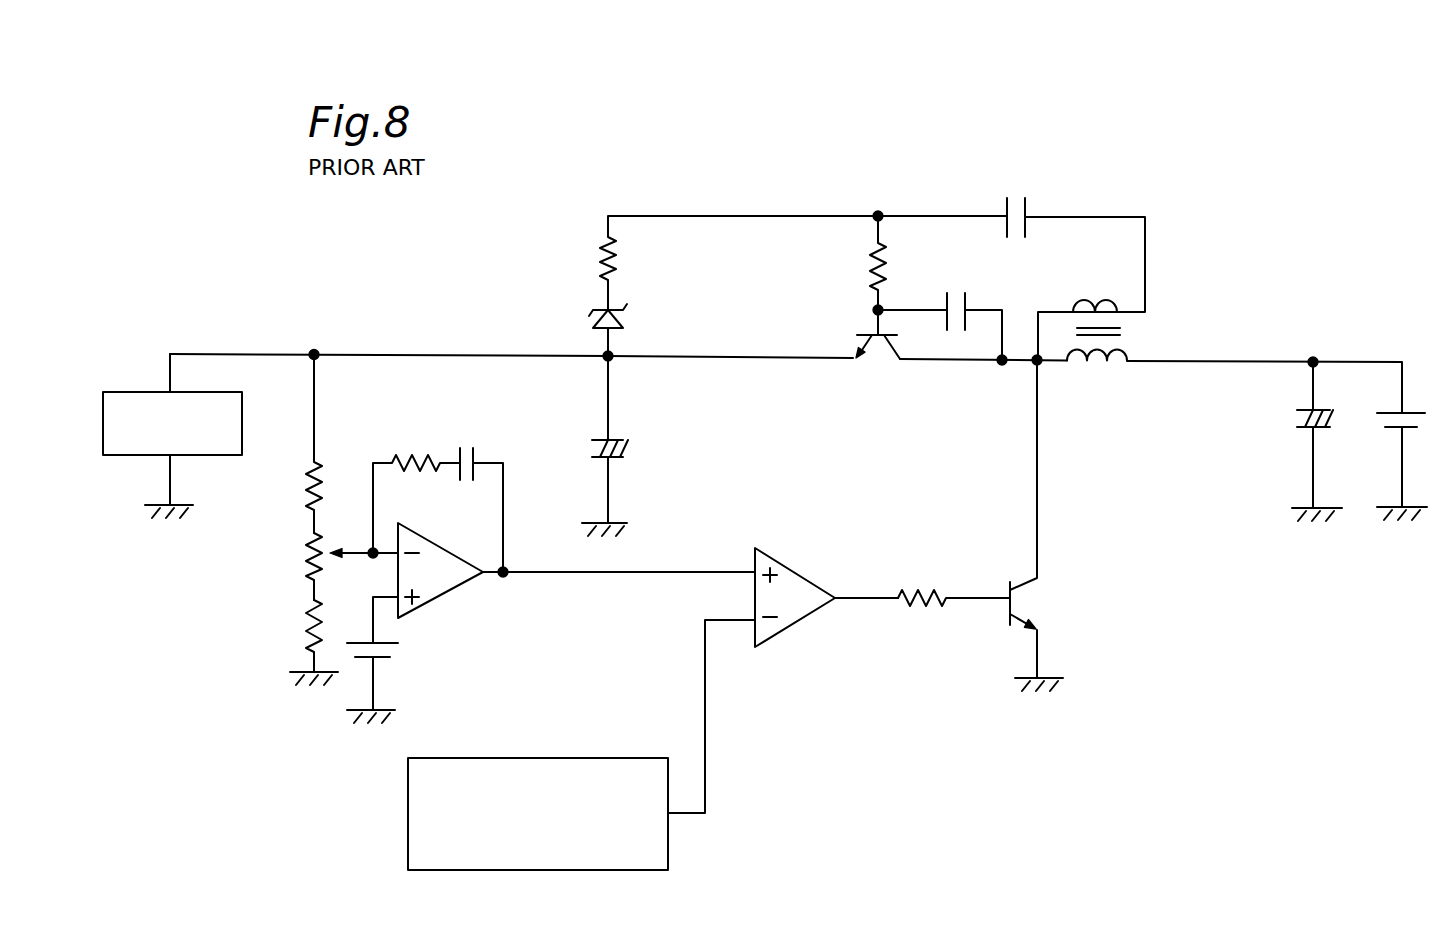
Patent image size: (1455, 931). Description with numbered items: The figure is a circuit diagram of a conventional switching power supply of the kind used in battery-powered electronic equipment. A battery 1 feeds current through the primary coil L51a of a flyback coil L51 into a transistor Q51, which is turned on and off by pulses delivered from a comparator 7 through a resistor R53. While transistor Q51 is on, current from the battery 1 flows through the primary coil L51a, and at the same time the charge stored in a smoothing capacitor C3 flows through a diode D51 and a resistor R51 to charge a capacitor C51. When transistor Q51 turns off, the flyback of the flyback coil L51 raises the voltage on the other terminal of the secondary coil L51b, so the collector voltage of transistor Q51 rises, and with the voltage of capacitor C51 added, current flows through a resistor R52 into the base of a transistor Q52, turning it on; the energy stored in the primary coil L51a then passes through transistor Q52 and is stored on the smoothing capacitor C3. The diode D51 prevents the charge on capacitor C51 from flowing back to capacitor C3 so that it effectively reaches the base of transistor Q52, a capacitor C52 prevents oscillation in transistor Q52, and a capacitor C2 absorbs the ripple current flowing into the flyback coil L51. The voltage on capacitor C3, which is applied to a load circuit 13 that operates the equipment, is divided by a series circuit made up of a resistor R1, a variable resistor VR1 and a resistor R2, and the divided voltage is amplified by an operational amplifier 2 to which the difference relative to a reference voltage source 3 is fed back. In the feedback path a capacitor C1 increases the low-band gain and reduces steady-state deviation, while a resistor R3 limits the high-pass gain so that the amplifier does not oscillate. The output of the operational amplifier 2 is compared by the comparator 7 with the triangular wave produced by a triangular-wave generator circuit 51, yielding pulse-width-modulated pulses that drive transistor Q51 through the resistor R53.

The load circuit 13 is at (125, 388).
The resistor R1 is at (308, 507).
The variable resistor VR1 is at (308, 580).
The resistor R2 is at (308, 636).
The operational amplifier 2 is at (427, 533).
The resistor R3 is at (418, 452).
The capacitor C1 is at (483, 452).
The reference voltage source 3 is at (393, 653).
The smoothing capacitor C3 is at (627, 448).
The comparator 7 is at (798, 570).
The triangular-wave generator circuit 51 is at (527, 758).
The resistor R53 is at (922, 615).
The transistor Q51 is at (1040, 597).
The resistor R51 is at (602, 247).
The diode D51 is at (593, 310).
The resistor R52 is at (870, 248).
The capacitor C51 is at (1015, 207).
The capacitor C52 is at (950, 337).
The transistor Q52 is at (878, 364).
The flyback coil L51 is at (1098, 380).
The primary coil L51a is at (1125, 367).
The secondary coil L51b is at (1103, 303).
The capacitor C2 is at (1333, 413).
The battery 1 is at (1422, 410).